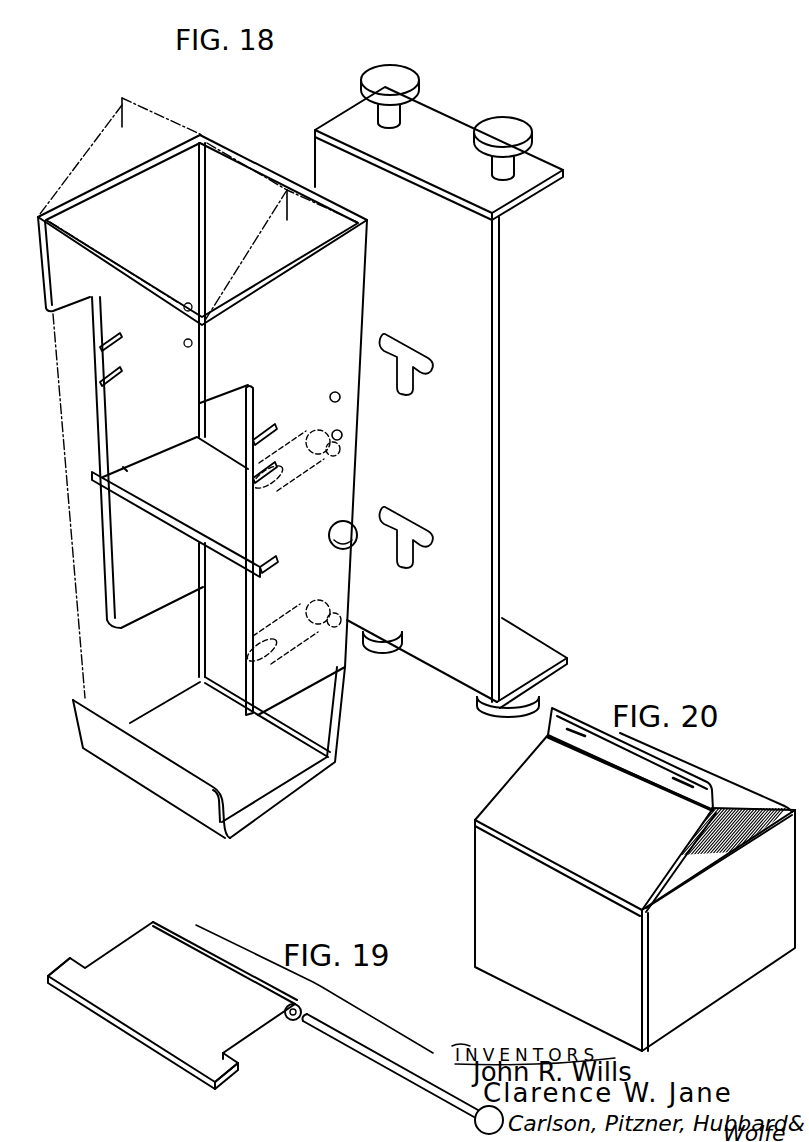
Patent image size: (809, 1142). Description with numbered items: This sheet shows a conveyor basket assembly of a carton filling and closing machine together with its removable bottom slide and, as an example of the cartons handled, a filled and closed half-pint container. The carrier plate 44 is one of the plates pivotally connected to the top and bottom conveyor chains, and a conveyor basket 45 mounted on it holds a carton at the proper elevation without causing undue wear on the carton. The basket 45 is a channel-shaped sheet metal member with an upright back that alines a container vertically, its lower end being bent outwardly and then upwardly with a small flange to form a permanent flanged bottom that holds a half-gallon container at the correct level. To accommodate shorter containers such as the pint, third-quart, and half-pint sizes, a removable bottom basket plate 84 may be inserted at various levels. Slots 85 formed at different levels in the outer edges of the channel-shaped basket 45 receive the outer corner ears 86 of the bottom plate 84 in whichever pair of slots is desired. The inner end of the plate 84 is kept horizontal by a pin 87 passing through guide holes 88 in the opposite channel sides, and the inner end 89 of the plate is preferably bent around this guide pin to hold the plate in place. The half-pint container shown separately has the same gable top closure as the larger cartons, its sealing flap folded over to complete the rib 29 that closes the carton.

In FIG. 20, the rib 29 is at (550, 737).
In FIG. 18, the carrier plate 44 is at (444, 307).
In FIG. 18, the conveyor basket 45 is at (318, 331).
In FIG. 18, the removable bottom basket plate 84 is at (204, 499).
In FIG. 19, the removable bottom basket plate 84 is at (133, 930).
In FIG. 18, the slots 85 is at (120, 370).
In FIG. 19, the outer corner ears 86 is at (60, 966).
In FIG. 19, the pin 87 is at (395, 1063).
In FIG. 18, the guide holes 88 is at (341, 432).
In FIG. 19, the inner end 89 is at (292, 1021).